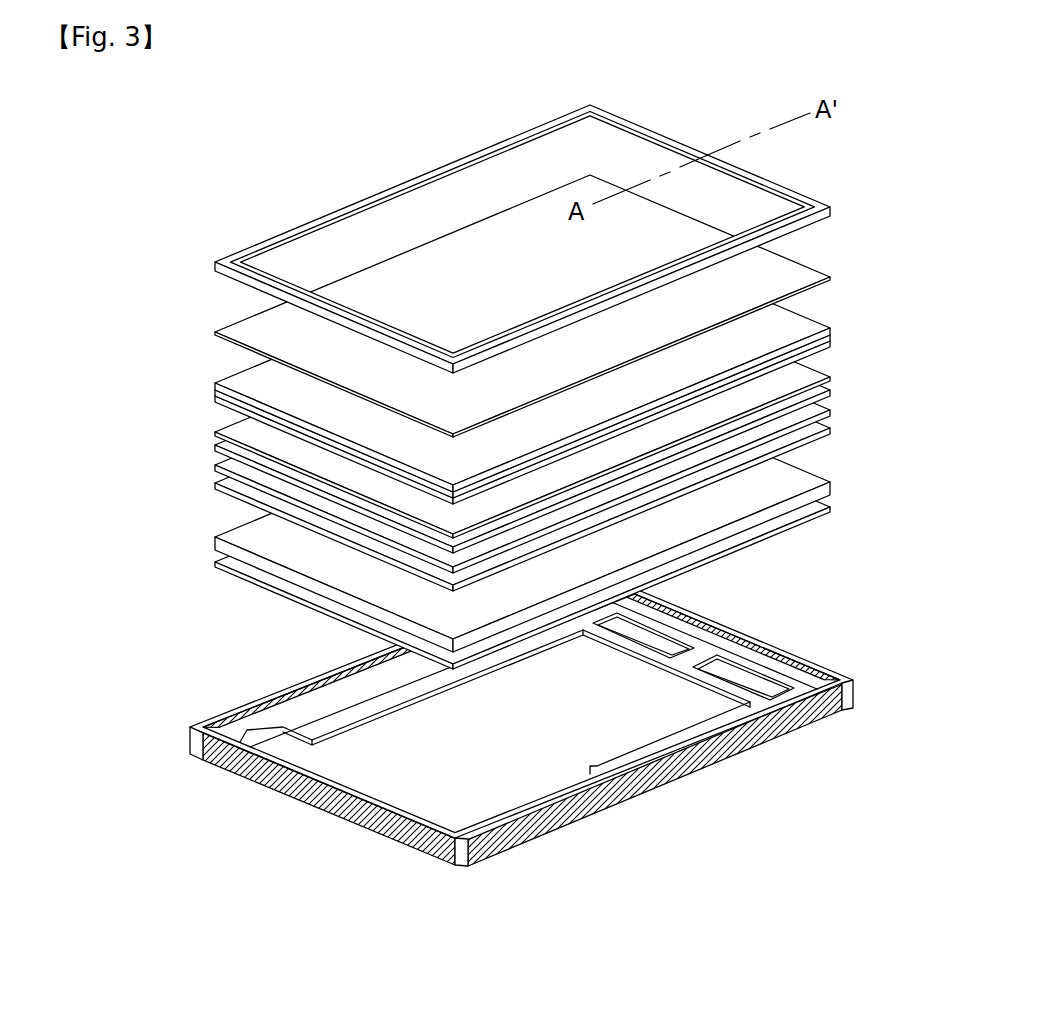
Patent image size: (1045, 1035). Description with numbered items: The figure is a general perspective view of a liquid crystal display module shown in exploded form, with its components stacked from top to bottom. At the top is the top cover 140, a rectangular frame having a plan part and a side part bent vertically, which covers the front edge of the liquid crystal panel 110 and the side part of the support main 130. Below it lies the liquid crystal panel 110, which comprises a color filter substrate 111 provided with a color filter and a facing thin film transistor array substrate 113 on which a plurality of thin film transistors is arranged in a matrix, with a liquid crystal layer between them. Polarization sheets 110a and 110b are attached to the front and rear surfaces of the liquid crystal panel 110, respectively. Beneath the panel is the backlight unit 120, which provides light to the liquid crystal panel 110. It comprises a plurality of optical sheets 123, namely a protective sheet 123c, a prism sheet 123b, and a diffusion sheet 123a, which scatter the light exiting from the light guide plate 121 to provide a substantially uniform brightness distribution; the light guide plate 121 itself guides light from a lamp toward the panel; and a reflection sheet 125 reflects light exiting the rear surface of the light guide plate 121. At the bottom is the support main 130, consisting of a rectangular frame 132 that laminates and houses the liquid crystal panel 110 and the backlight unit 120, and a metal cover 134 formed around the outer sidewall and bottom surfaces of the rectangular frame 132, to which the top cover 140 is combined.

The liquid crystal panel 110 is at (508, 356).
The polarization sheet 110a is at (233, 328).
The polarization sheet 110b is at (215, 433).
The color filter substrate 111 is at (835, 330).
The thin film transistor array substrate 113 is at (835, 338).
The backlight unit 120 is at (491, 478).
The light guide plate 121 is at (233, 541).
The optical sheets 123 is at (530, 439).
The diffusion sheet 123a is at (835, 430).
The prism sheet 123b is at (835, 412).
The protective sheet 123c is at (835, 394).
The reflection sheet 125 is at (225, 563).
The support main 130 is at (535, 717).
The rectangular frame 132 is at (852, 682).
The metal cover 134 is at (853, 705).
The top cover 140 is at (278, 237).